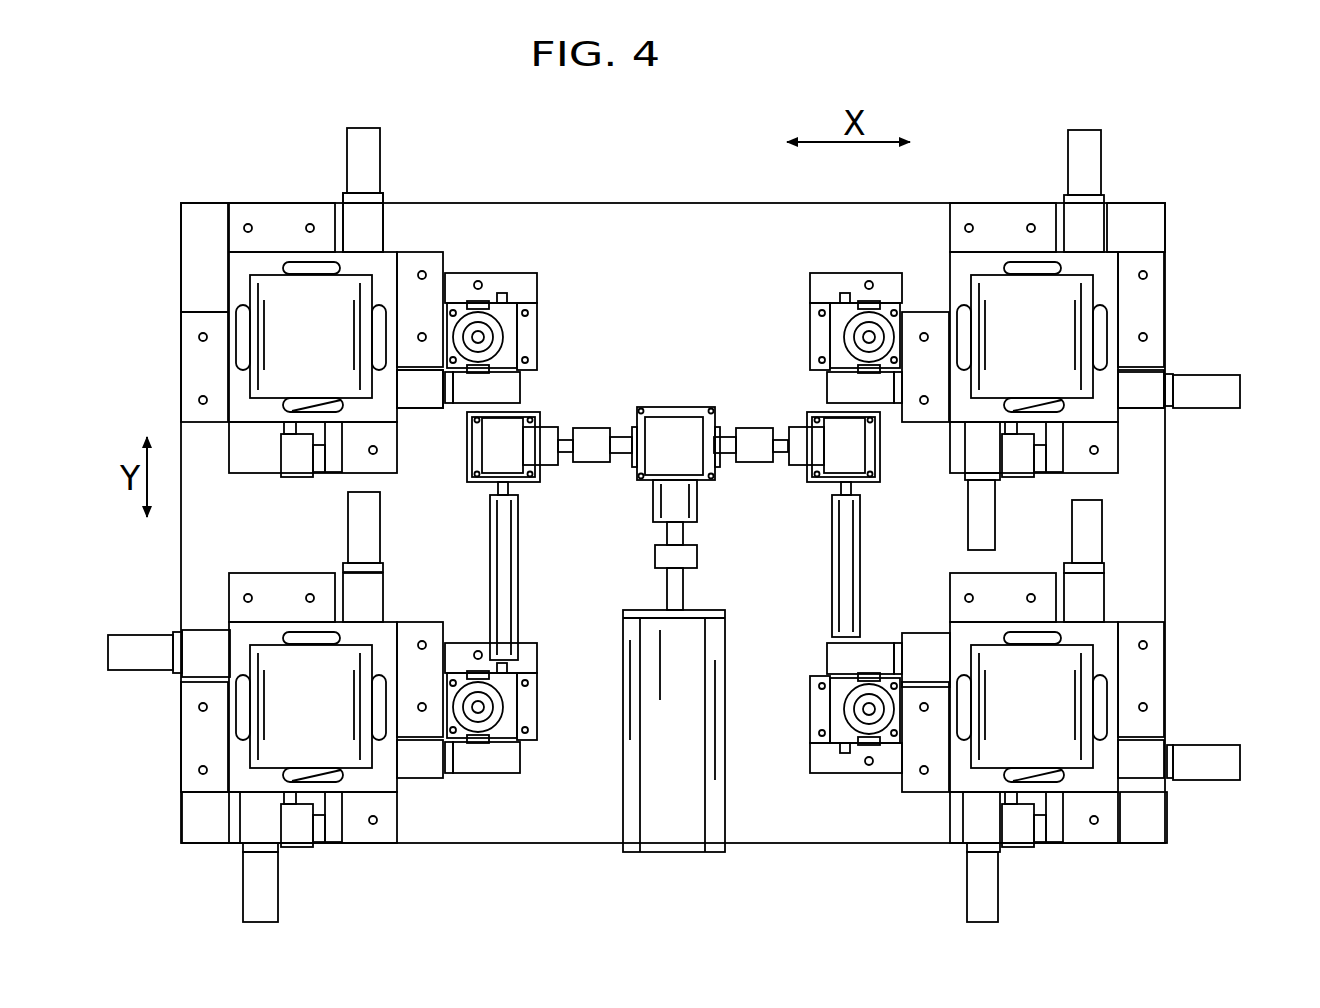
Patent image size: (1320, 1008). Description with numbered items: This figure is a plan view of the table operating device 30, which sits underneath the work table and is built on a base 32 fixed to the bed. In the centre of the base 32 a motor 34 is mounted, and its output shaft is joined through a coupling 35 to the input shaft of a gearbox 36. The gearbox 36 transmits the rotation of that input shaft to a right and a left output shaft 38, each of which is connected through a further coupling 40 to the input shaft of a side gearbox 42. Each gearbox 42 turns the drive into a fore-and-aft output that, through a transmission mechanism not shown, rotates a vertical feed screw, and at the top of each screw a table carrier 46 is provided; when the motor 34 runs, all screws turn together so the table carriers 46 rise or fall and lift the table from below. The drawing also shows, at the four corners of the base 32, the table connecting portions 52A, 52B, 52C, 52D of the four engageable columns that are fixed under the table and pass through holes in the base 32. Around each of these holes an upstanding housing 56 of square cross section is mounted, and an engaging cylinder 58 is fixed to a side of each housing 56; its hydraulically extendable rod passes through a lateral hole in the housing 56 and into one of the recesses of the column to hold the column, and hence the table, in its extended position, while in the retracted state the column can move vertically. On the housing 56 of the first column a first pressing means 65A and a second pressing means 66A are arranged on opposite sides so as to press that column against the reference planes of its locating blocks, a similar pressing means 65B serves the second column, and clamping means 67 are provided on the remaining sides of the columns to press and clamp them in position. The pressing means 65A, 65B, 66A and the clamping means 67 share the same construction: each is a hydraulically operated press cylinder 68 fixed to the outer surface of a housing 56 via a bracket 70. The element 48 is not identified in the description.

The table operating device 30 is at (642, 197).
The base 32 is at (548, 835).
The motor 34 is at (663, 840).
The coupling 35 is at (697, 557).
The gearbox 36 is at (683, 420).
The output shaft 38 is at (622, 442).
The coupling 40 is at (588, 452).
The gearbox 42 is at (528, 443).
The table carrier 46 is at (497, 318).
The gear housing 48 is at (530, 312).
The table connecting portion 52A is at (268, 295).
The table connecting portion 52B is at (1075, 302).
The table connecting portion 52C is at (275, 660).
The table connecting portion 52D is at (1068, 665).
The housing 56 is at (383, 262).
The engaging cylinder 58 is at (290, 452).
The first pressing means 65A is at (450, 425).
The pressing means 65B is at (1203, 413).
The second pressing means 66A is at (325, 182).
The clamping means 67 is at (1110, 190).
The press cylinder 68 is at (372, 143).
The bracket 70 is at (362, 210).